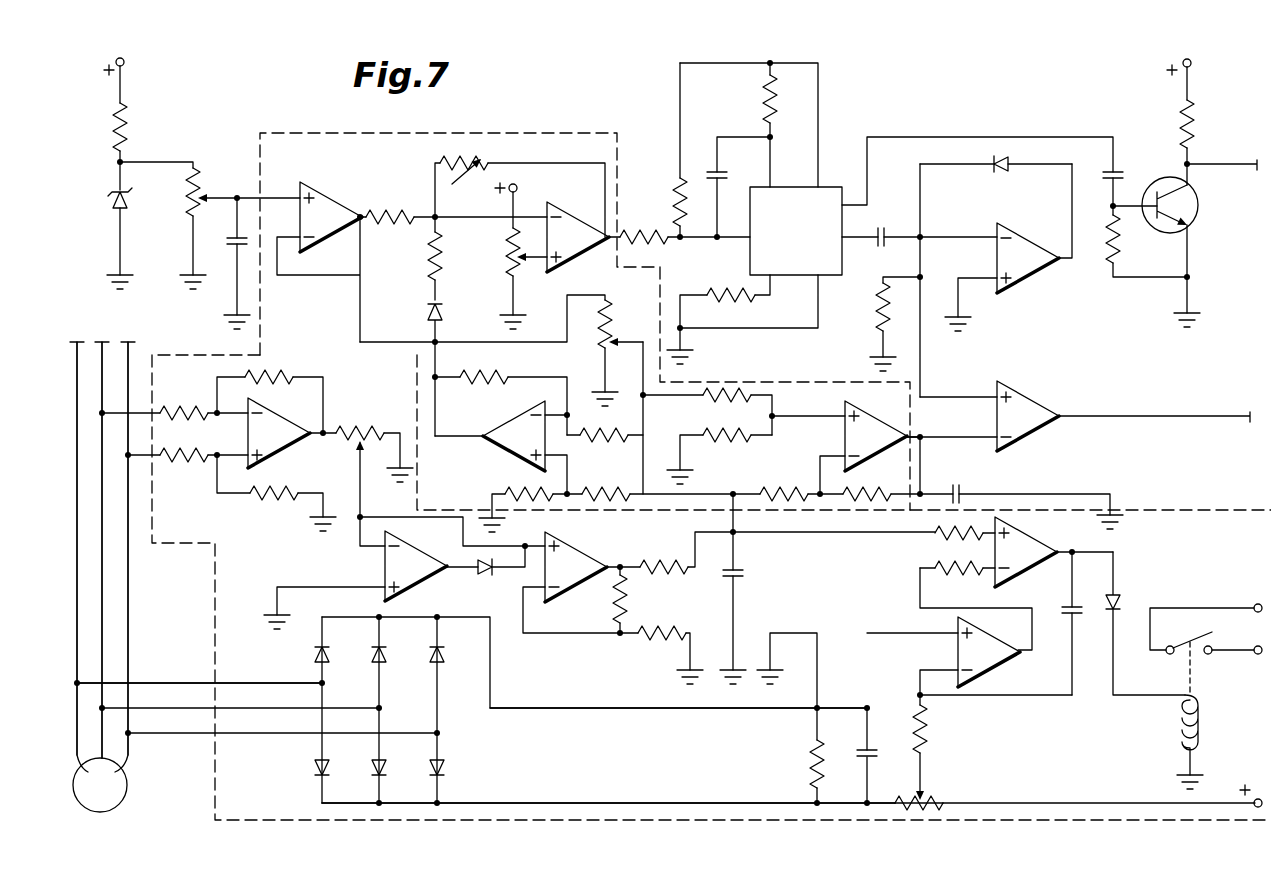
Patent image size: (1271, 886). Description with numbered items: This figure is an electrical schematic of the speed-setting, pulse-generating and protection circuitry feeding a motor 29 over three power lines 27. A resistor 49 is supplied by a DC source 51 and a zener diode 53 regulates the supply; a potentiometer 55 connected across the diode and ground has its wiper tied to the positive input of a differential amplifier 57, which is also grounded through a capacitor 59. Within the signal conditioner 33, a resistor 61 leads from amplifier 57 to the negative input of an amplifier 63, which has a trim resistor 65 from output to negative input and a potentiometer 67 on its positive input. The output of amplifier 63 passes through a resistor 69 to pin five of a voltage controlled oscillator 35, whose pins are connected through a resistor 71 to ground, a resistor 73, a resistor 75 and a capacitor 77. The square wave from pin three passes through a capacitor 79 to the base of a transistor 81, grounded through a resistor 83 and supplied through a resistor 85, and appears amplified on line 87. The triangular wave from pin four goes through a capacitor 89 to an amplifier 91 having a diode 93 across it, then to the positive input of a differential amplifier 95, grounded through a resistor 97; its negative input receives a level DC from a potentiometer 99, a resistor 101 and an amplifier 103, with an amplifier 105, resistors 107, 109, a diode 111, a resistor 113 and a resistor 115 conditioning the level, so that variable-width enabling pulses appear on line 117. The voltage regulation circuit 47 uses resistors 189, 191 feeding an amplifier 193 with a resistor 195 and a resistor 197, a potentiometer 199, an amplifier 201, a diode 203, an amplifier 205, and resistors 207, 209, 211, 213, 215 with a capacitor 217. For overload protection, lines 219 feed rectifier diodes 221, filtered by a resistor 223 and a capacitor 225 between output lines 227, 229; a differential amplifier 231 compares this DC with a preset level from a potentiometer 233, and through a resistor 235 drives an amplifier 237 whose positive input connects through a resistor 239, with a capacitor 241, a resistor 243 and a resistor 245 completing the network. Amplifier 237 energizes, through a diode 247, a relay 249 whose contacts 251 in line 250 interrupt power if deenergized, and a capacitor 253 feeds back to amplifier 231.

The power lines 27 is at (105, 585).
The motor 29 is at (128, 783).
The signal conditioner 33 is at (325, 133).
The oscillator 35 is at (748, 258).
The voltage regulation circuit 47 is at (1200, 507).
The resistor 49 is at (122, 108).
The source of DC power 51 is at (125, 63).
The zener diode 53 is at (124, 208).
The potentiometer 55 is at (210, 195).
The differential amplifier 57 is at (328, 190).
The capacitor 59 is at (233, 250).
The resistor 61 is at (400, 210).
The amplifier 63 is at (565, 213).
The trim resistor 65 is at (458, 158).
The potentiometer 67 is at (505, 262).
The resistor 69 is at (642, 232).
The resistor 71 is at (728, 302).
The resistor 73 is at (676, 190).
The resistor 75 is at (765, 100).
The capacitor 77 is at (712, 170).
The capacitor 79 is at (1120, 172).
The transistor 81 is at (1198, 218).
The resistor 83 is at (1105, 255).
The resistor 85 is at (1183, 125).
The line 87 is at (1225, 160).
The capacitor 89 is at (886, 230).
The amplifier 91 is at (1020, 290).
The diode 93 is at (1004, 170).
The differential amplifier 95 is at (1030, 400).
The resistor 97 is at (878, 305).
The potentiometer 99 is at (612, 322).
The resistor 101 is at (722, 392).
The amplifier 103 is at (890, 425).
The amplifier 105 is at (510, 425).
The resistor 107 is at (605, 440).
The resistor 109 is at (488, 374).
The diode 111 is at (446, 312).
The resistor 113 is at (430, 272).
The resistor 115 is at (722, 445).
The line 117 is at (1200, 415).
The resistor 189 is at (185, 410).
The resistor 191 is at (188, 458).
The amplifier 193 is at (280, 450).
The resistor 195 is at (272, 377).
The resistor 197 is at (270, 497).
The potentiometer 199 is at (362, 428).
The amplifier 201 is at (383, 565).
The diode 203 is at (478, 574).
The amplifier 205 is at (580, 555).
The resistor 207 is at (660, 563).
The resistor 209 is at (778, 492).
The resistor 211 is at (590, 492).
The resistor 213 is at (518, 492).
The resistor 215 is at (862, 492).
The capacitor 217 is at (965, 490).
The lines 219 is at (160, 683).
The diodes 221 is at (315, 778).
The resistor 223 is at (812, 760).
The capacitor 225 is at (872, 750).
The output line 227 is at (577, 706).
The output line 229 is at (577, 801).
The differential amplifier 231 is at (956, 650).
The potentiometer 233 is at (925, 730).
The resistor 235 is at (958, 570).
The amplifier 237 is at (1030, 540).
The resistor 239 is at (952, 537).
The capacitor 241 is at (745, 573).
The resistor 243 is at (627, 600).
The resistor 245 is at (655, 640).
The diode 247 is at (1120, 598).
The relay 249 is at (1200, 722).
The line 250 is at (1210, 607).
The contacts 251 is at (1200, 637).
The capacitor 253 is at (1068, 622).